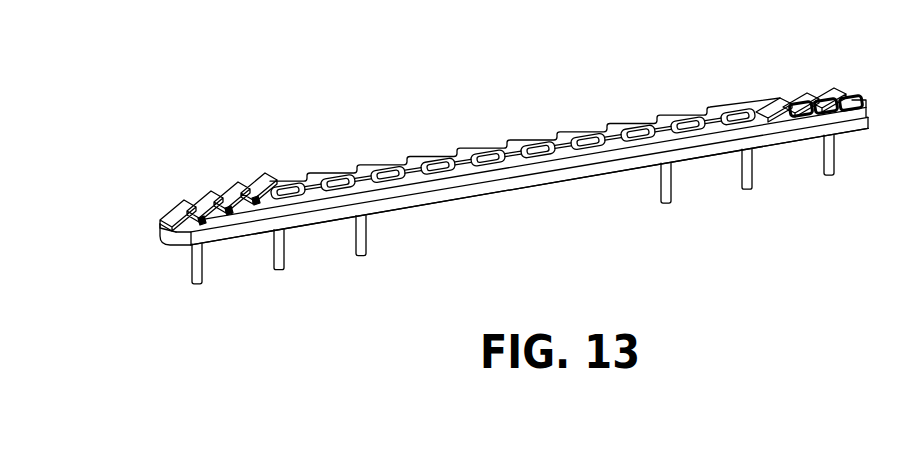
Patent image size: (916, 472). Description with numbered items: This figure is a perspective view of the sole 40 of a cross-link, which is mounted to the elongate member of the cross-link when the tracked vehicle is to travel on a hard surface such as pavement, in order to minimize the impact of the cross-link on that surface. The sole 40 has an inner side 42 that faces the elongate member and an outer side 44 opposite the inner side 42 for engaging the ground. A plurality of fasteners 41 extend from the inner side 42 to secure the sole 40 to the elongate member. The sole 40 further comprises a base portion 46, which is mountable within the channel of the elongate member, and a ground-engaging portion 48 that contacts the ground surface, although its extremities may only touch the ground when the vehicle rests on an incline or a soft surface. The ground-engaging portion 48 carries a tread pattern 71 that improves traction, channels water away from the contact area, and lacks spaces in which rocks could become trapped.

The sole 40 is at (567, 74).
The fasteners 41 is at (197, 284).
The inner side 42 is at (555, 182).
The outer side 44 is at (661, 115).
The base portion 46 is at (467, 192).
The ground-engaging portion 48 is at (467, 152).
The tread pattern 71 is at (362, 170).